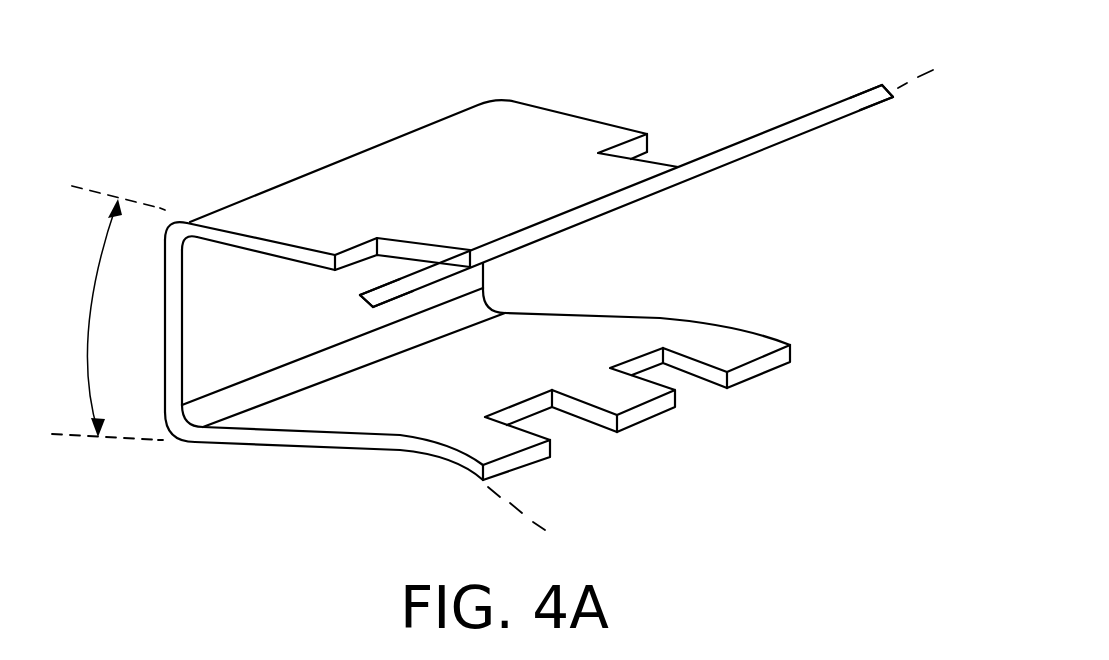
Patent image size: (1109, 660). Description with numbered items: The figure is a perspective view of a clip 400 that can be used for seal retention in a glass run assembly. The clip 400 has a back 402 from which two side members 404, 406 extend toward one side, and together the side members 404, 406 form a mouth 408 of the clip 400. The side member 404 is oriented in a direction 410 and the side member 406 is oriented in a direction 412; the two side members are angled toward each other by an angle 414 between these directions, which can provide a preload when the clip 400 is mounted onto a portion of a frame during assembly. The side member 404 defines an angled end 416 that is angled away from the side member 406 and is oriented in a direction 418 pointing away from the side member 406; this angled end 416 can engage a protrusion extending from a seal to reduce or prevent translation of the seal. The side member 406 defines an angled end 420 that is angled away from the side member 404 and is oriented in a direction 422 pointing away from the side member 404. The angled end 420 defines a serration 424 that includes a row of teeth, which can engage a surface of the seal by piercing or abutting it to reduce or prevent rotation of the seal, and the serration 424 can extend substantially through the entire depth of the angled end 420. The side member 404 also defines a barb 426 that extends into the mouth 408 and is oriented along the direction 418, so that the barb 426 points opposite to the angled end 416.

The clip 400 is at (677, 68).
The back 402 is at (165, 367).
The side member 404 is at (313, 255).
The side member 406 is at (300, 440).
The mouth 408 is at (742, 270).
The direction 410 is at (148, 206).
The direction 412 is at (147, 440).
The angle 414 is at (93, 305).
The angled end 416 is at (548, 220).
The direction 418 is at (913, 82).
The angled end 420 is at (443, 462).
The direction 422 is at (517, 510).
The serration 424 is at (650, 430).
The barb 426 is at (363, 296).